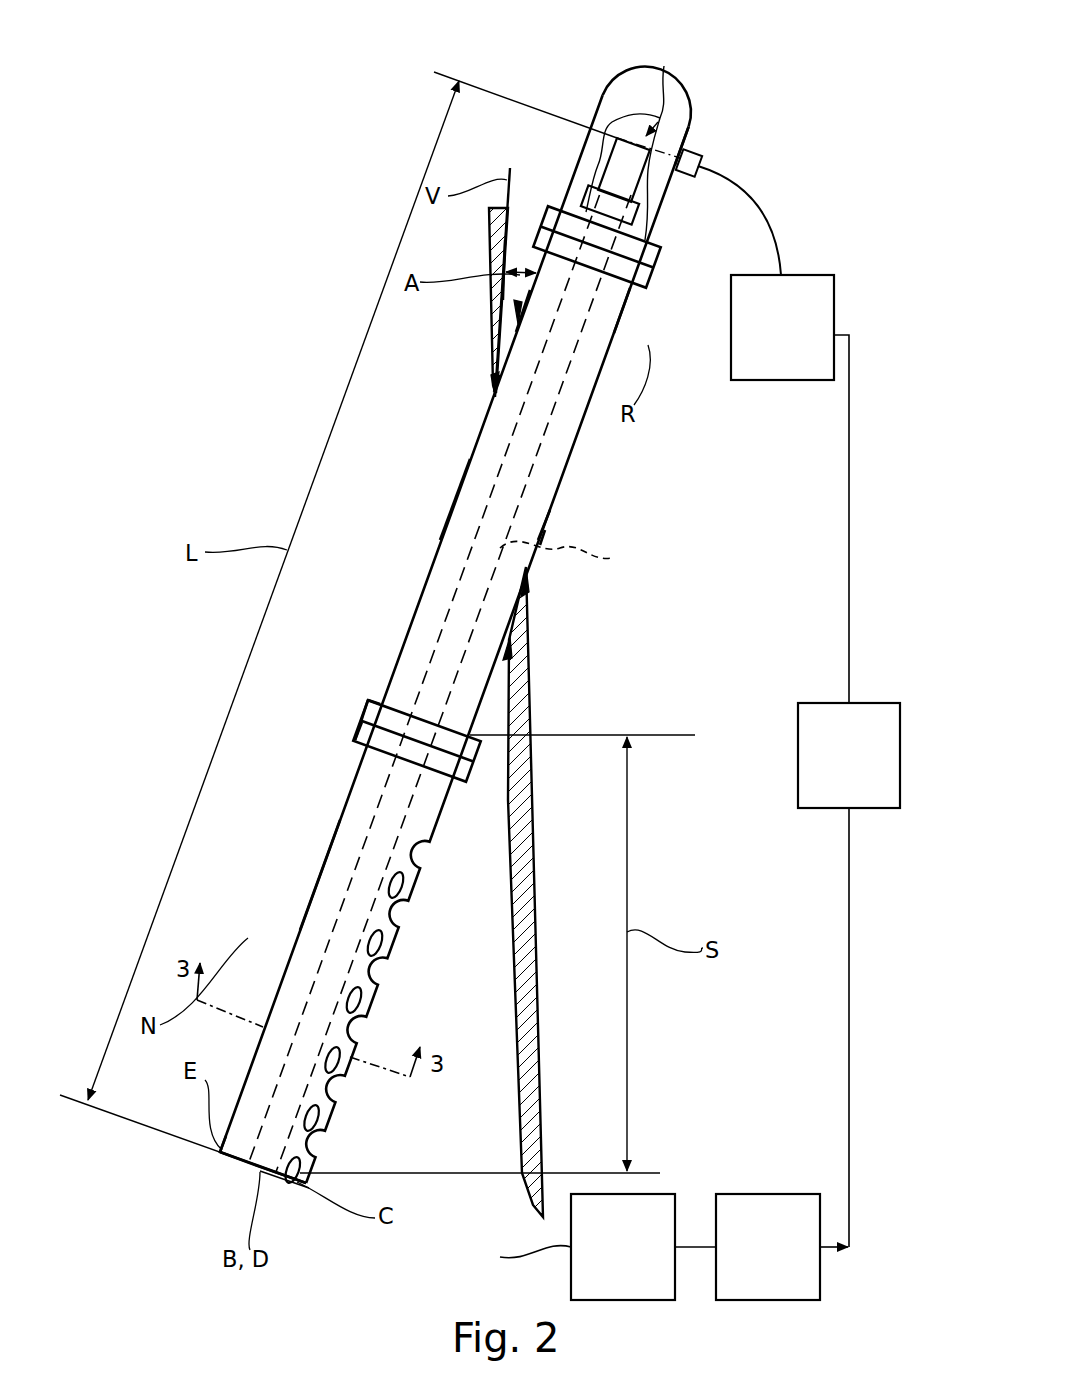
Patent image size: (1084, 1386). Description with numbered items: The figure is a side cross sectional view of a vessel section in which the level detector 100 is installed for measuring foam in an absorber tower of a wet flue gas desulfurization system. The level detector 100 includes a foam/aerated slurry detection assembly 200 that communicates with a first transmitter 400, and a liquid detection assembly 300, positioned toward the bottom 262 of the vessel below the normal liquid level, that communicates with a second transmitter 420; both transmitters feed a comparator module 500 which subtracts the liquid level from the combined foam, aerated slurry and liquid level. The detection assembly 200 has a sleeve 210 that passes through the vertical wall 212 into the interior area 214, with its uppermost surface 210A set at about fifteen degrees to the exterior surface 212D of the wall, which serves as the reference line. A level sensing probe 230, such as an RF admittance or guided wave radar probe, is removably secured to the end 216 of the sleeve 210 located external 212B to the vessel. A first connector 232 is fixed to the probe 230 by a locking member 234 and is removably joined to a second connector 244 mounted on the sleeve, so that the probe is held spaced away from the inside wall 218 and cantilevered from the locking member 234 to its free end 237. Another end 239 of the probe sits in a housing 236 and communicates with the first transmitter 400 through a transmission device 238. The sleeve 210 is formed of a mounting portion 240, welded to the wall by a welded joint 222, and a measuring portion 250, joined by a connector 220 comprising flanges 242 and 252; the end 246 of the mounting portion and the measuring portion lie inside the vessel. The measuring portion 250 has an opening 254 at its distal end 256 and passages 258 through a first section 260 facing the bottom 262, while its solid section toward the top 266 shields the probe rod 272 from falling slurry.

The level detector 100 is at (228, 394).
The foam/aerated slurry detection assembly 200 is at (700, 578).
The sleeve 210 is at (398, 615).
The uppermost surface 210A is at (514, 332).
The wall 212 is at (505, 238).
The external 212B is at (845, 65).
The exterior surface 212D is at (500, 302).
The interior area 214 is at (490, 890).
The end 216 is at (634, 300).
The inside wall 218 is at (548, 520).
The connector 220 is at (356, 725).
The welded joint 222 is at (500, 347).
The level sensing probe 230 is at (582, 553).
The first connector 232 is at (662, 250).
The locking member 234 is at (583, 197).
The housing 236 is at (697, 93).
The free end 237 is at (243, 1165).
The transmission device 238 is at (758, 205).
The another end 239 is at (678, 52).
The mounting portion 240 is at (458, 490).
The flange 242 is at (358, 702).
The second connector 244 is at (640, 285).
The end 246 is at (362, 690).
The measuring portion 250 is at (322, 873).
The flange 252 is at (357, 745).
The opening 254 is at (205, 1165).
The distal end 256 is at (232, 1160).
The passages 258 is at (422, 862).
The first section 260 is at (283, 1185).
The bottom 262 is at (447, 1249).
The top 266 is at (397, 148).
The probe rod 272 is at (486, 548).
The liquid detection assembly 300 is at (660, 1285).
The first transmitter 400 is at (780, 382).
The second transmitter 420 is at (805, 1285).
The comparator module 500 is at (800, 760).